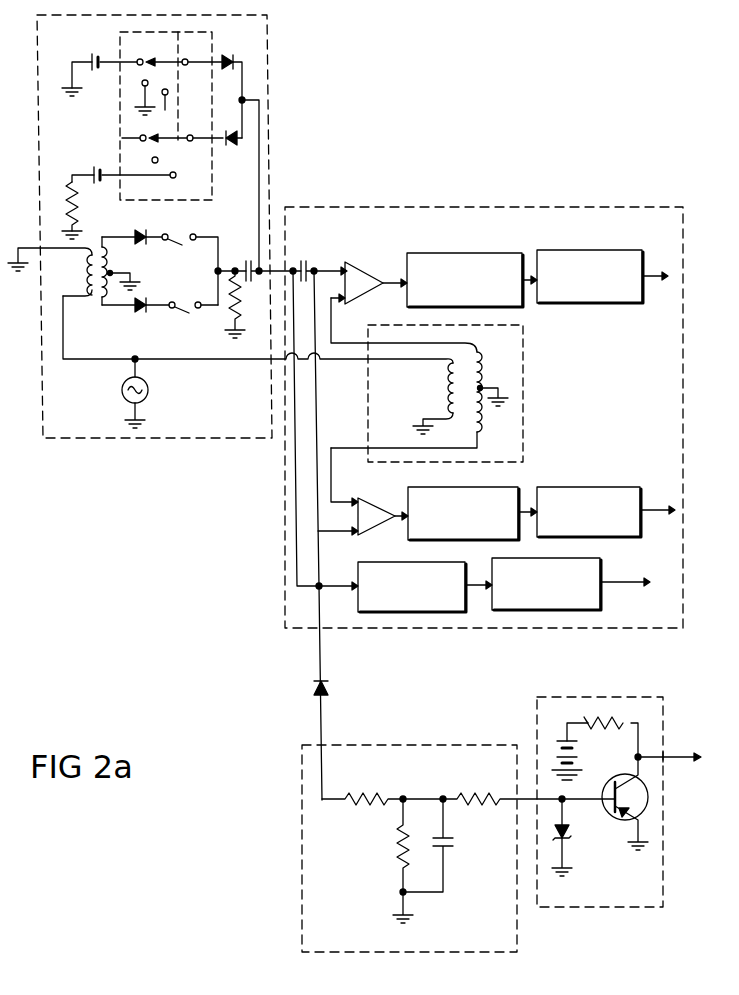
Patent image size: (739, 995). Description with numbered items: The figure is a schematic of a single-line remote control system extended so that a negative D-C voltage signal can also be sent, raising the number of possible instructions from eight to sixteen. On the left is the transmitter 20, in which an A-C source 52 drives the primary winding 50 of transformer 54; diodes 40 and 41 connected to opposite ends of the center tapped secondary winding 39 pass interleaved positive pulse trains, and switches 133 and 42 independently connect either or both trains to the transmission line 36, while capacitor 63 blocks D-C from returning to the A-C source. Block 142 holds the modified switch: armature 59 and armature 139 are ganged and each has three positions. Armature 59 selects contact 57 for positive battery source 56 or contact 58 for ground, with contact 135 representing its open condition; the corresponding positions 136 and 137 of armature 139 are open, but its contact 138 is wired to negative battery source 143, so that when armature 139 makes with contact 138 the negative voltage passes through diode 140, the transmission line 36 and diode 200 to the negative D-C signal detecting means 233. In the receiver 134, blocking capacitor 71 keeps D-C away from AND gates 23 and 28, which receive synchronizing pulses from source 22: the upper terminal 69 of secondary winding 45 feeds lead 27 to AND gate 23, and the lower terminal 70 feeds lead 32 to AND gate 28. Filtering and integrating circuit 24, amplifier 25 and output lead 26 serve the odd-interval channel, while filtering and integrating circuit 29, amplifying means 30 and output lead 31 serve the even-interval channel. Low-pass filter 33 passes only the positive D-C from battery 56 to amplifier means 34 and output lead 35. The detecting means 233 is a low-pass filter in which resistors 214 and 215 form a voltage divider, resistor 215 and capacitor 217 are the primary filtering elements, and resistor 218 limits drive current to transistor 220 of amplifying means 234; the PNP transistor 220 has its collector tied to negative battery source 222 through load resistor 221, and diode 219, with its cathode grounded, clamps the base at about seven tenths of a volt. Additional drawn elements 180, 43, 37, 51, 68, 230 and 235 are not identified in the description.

The transmitter 20 is at (269, 35).
The switch block 142 is at (200, 200).
The battery source 56 is at (92, 55).
The contact 57 is at (154, 47).
The armature 59 is at (182, 58).
The contact 58 is at (142, 84).
The contact 135 is at (163, 110).
The switch contact 136 is at (115, 137).
The armature 139 is at (168, 141).
The diode 140 is at (239, 153).
The switch contact 137 is at (140, 159).
The negative battery source 143 is at (92, 172).
The contact 138 is at (176, 178).
The resistor 180 is at (91, 210).
The primary winding 50 is at (57, 271).
The center tapped secondary winding 39 is at (113, 263).
The transformer 54 is at (95, 300).
The diode 40 is at (138, 233).
The switch 133 is at (190, 269).
The diode 41 is at (140, 313).
The switch 42 is at (181, 313).
The resistor 43 is at (248, 303).
The capacitor 63 is at (245, 262).
The A-C source 52 is at (148, 390).
The receiver 134 is at (540, 207).
The transmission line 36 is at (276, 266).
The blocking capacitor 71 is at (303, 262).
The signal line 37 is at (318, 395).
The AND gate 23 is at (363, 292).
The lead 27 is at (331, 323).
The filtering and integrating circuit 24 is at (484, 253).
The amplifier 25 is at (596, 250).
The output lead 26 is at (657, 280).
The synchronizing signal source 22 is at (523, 418).
The primary winding 51 is at (450, 377).
The winding end 68 is at (455, 416).
The secondary winding 45 is at (482, 361).
The upper terminal 69 is at (470, 345).
The lower terminal 70 is at (470, 448).
The lead 32 is at (360, 447).
The AND gate 28 is at (366, 529).
The filtering and integrating circuit 29 is at (496, 487).
The amplifying means 30 is at (607, 487).
The output lead 31 is at (651, 512).
The low-pass filter 33 is at (432, 562).
The amplifier means 34 is at (556, 558).
The output lead 35 is at (625, 579).
The diode 219 is at (326, 655).
The diode 200 is at (330, 688).
The negative D-C signal detecting means 233 is at (443, 745).
The resistor 214 is at (362, 808).
The junction 230 is at (403, 796).
The resistor 218 is at (483, 797).
The resistor 215 is at (393, 855).
The capacitor 217 is at (449, 846).
The amplifying means 234 is at (565, 697).
The transistor 220 is at (612, 815).
The load resistor 221 is at (612, 722).
The negative battery source 222 is at (580, 752).
The output 235 is at (676, 761).